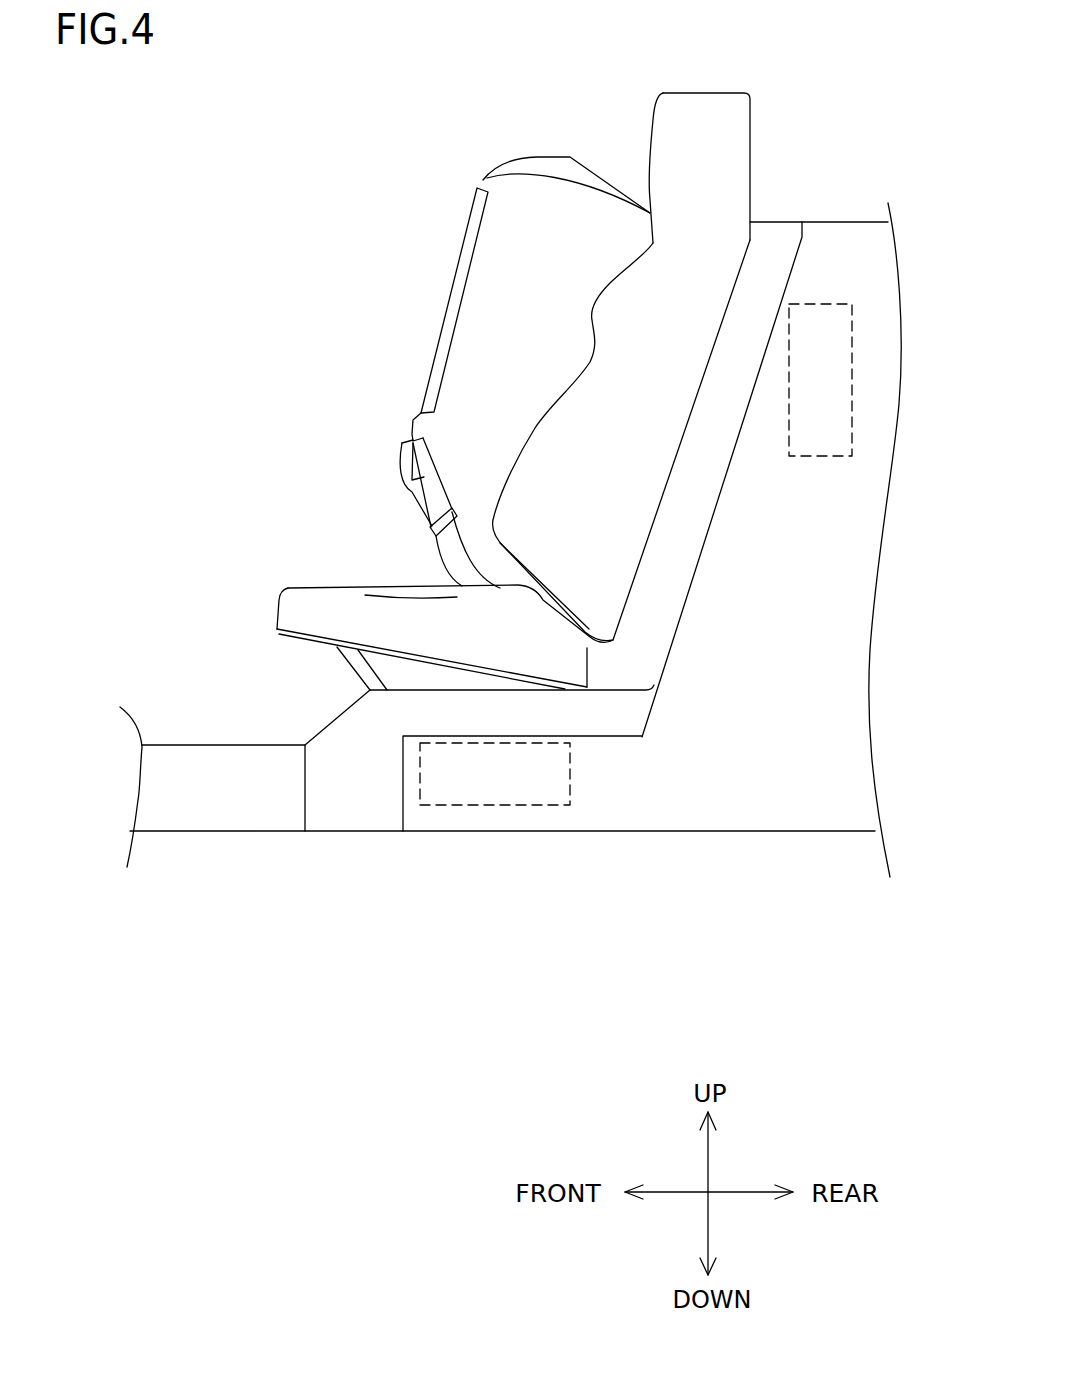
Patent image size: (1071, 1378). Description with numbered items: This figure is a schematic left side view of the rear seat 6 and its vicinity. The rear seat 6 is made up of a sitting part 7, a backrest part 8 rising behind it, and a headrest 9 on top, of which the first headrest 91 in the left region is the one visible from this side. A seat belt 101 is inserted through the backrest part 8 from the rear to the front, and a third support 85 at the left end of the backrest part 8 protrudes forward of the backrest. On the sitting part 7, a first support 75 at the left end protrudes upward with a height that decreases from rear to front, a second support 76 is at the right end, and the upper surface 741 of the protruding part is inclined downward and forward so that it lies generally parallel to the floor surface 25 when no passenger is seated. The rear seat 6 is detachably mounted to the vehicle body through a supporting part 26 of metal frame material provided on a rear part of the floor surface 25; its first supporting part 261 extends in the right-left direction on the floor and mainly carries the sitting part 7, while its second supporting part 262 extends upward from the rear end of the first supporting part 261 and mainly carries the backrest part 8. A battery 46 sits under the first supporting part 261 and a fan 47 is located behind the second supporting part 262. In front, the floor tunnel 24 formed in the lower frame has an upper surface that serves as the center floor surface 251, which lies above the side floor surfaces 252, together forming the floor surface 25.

The rear seat 6 is at (323, 156).
The sitting part 7 is at (249, 605).
The backrest part 8 is at (542, 330).
The headrest 9 is at (758, 112).
The first headrest 91 is at (737, 150).
The seat belt 101 is at (537, 157).
The third support 85 is at (683, 313).
The fan 47 is at (852, 382).
The battery 46 is at (492, 805).
The second support 76 is at (455, 583).
The upper surface of the protruding part 741 is at (427, 593).
The first support 75 is at (467, 637).
The floor tunnel 24 is at (205, 773).
The floor surface 25 is at (255, 920).
The center floor surface 251 is at (252, 745).
The side floor surface 252 is at (217, 830).
The supporting part 26 is at (850, 948).
The first supporting part 261 is at (417, 707).
The second supporting part 262 is at (647, 645).